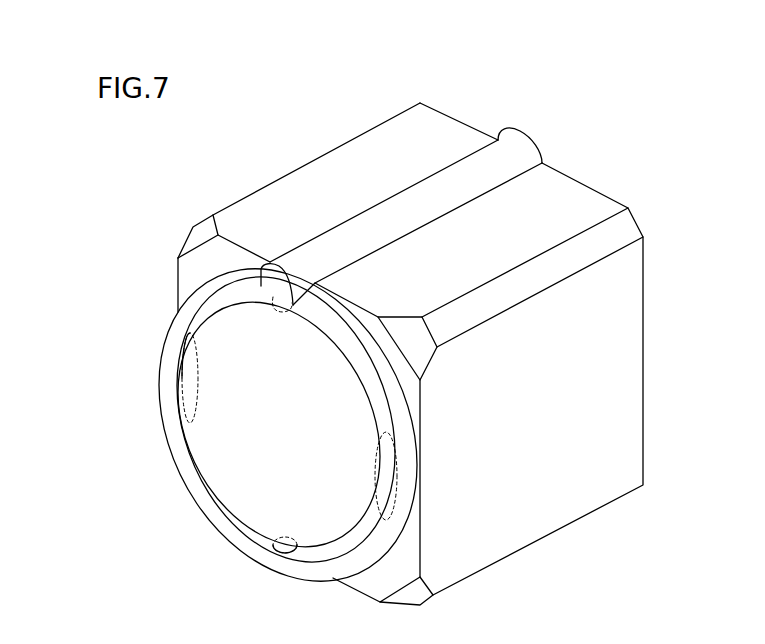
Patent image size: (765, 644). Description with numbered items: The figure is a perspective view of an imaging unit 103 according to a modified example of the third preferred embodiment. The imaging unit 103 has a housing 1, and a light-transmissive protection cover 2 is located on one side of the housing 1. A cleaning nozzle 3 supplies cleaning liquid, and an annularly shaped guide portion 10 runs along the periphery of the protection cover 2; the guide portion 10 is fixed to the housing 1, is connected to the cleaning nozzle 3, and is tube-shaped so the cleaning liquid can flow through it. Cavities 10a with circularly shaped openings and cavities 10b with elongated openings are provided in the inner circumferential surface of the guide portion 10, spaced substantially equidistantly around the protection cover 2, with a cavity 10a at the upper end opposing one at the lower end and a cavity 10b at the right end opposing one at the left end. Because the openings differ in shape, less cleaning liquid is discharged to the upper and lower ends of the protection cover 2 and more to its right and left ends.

The imaging unit 103 is at (658, 100).
The housing 1 is at (540, 493).
The protection cover 2 is at (265, 505).
The cleaning nozzle 3 is at (513, 153).
The guide portion 10 is at (302, 570).
The cavity 10a is at (261, 283).
The cavity 10b is at (183, 341).